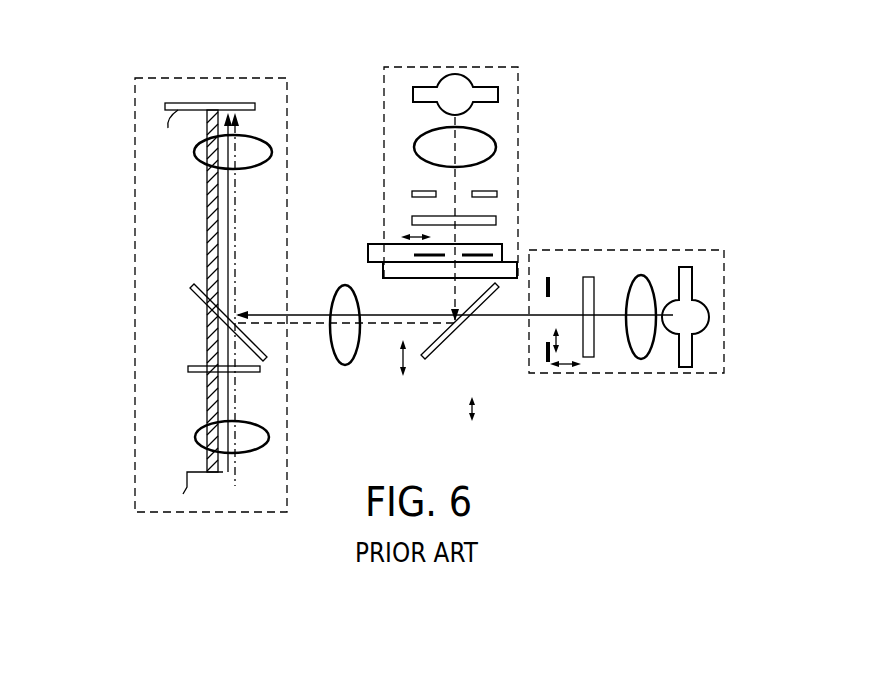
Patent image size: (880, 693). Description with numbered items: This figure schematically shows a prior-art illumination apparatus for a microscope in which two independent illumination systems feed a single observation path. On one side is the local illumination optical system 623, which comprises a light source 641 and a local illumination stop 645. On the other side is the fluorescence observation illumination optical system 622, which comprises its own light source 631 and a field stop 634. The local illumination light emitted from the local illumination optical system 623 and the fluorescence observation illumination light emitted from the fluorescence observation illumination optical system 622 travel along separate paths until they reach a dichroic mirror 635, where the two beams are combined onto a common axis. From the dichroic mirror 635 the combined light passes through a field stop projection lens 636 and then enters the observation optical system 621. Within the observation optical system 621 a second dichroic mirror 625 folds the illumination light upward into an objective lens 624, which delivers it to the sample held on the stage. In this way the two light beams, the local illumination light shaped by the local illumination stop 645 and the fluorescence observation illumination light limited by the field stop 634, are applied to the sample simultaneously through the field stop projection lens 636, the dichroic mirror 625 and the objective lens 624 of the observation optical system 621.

The observation optical system 621 is at (133, 213).
The fluorescence observation illumination optical system 622 is at (657, 248).
The local illumination optical system 623 is at (383, 118).
The objective lens 624 is at (195, 152).
The dichroic mirror 625 is at (195, 297).
The light source 631 is at (685, 367).
The field stop 634 is at (546, 362).
The dichroic mirror 635 is at (432, 358).
The field stop projection lens 636 is at (345, 366).
The light source 641 is at (498, 94).
The local illumination stop 645 is at (485, 254).